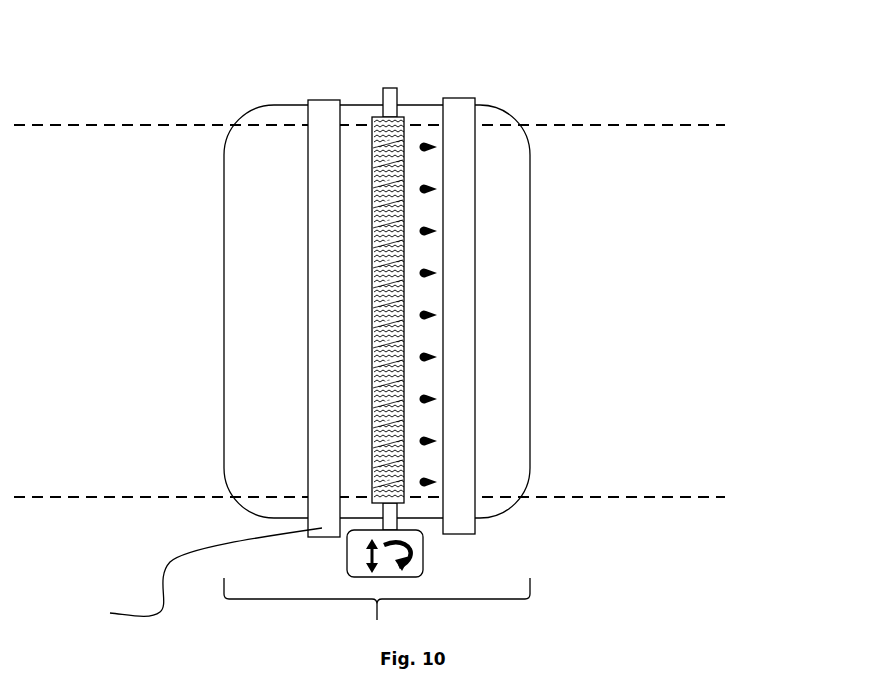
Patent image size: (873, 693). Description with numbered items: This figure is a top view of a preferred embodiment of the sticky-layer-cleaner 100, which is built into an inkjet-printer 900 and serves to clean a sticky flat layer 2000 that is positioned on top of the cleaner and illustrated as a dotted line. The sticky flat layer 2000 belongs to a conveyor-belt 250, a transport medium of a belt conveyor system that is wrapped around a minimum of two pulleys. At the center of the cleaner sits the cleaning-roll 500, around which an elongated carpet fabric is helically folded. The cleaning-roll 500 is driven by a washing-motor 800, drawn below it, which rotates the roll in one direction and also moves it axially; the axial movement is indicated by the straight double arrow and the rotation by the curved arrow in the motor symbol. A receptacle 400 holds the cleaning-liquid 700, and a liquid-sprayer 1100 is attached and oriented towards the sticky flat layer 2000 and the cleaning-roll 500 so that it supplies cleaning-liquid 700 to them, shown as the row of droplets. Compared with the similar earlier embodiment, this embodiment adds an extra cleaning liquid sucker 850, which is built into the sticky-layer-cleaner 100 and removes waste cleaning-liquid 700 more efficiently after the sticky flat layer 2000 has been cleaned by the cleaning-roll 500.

The sticky-layer-cleaner 100 is at (377, 612).
The conveyor-belt 250 is at (380, 366).
The receptacle 400 is at (298, 103).
The cleaning-roll 500 is at (382, 120).
The cleaning-liquid 700 is at (255, 340).
The washing-motor 800 is at (425, 550).
The cleaning liquid sucker 850 is at (196, 576).
The inkjet-printer 900 is at (784, 78).
The liquid-sprayer 1100 is at (462, 102).
The sticky flat layer 2000 is at (82, 473).